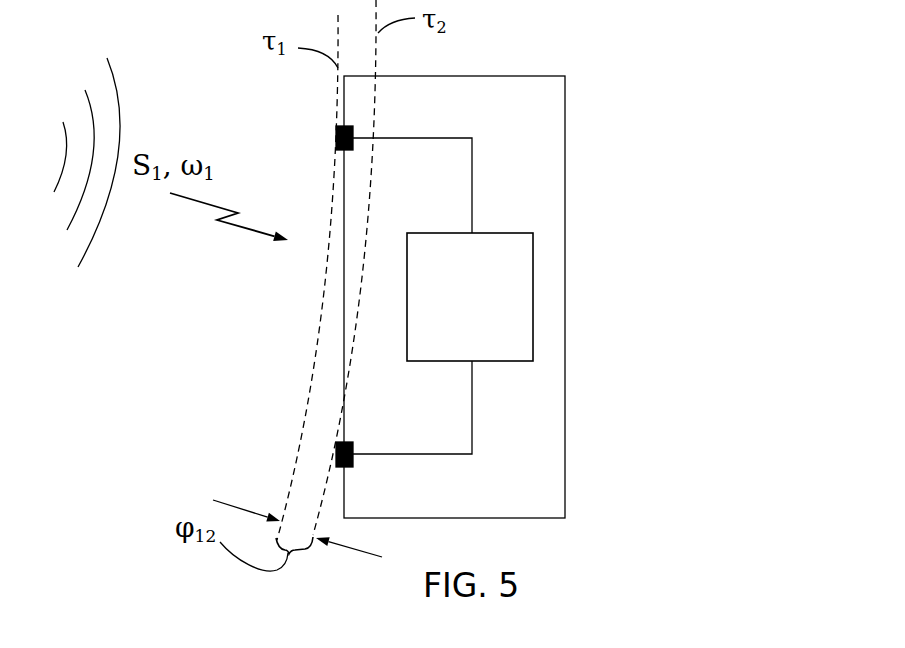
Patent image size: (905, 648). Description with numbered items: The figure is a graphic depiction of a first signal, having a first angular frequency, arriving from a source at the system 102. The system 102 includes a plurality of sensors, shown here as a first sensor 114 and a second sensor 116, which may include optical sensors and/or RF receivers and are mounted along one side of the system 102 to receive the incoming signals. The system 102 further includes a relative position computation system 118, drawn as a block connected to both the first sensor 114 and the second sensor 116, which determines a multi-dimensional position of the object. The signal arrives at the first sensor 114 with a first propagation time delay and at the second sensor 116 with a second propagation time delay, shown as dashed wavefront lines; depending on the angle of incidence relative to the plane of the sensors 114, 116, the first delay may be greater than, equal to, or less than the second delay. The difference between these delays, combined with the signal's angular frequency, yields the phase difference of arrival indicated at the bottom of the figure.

The system 102 is at (551, 76).
The first sensor 114 is at (351, 153).
The second sensor 116 is at (351, 442).
The relative position computation system 118 is at (534, 265).